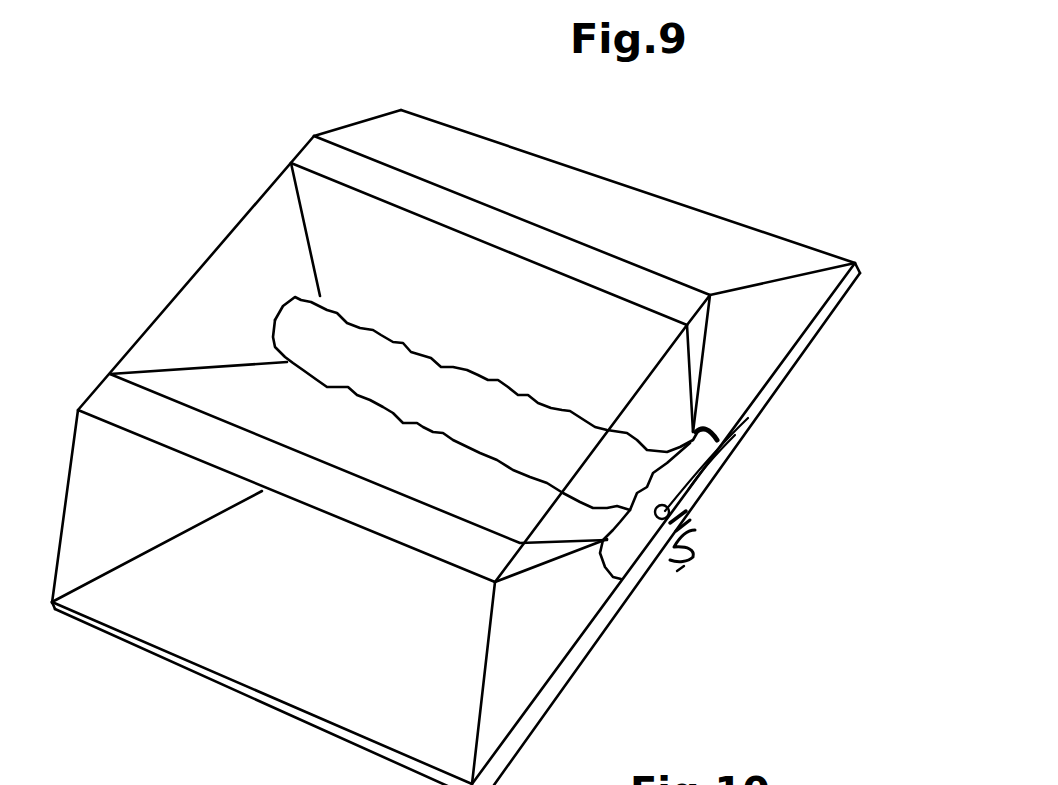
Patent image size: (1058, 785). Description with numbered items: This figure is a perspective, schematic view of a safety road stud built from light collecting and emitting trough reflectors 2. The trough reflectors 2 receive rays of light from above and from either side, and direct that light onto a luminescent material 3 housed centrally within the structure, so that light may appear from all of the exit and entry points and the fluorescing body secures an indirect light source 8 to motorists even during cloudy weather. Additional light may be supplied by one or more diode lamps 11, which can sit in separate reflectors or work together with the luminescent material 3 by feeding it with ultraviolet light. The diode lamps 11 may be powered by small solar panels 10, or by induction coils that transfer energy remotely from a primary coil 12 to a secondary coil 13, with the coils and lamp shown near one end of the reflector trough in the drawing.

The trough reflectors 2 is at (241, 258).
The luminescent material 3 is at (298, 335).
The indirect light source 8 is at (456, 447).
The solar panel 10 is at (325, 163).
The diode lamp 11 is at (719, 440).
The primary coil 12 is at (696, 575).
The secondary coil 13 is at (688, 503).